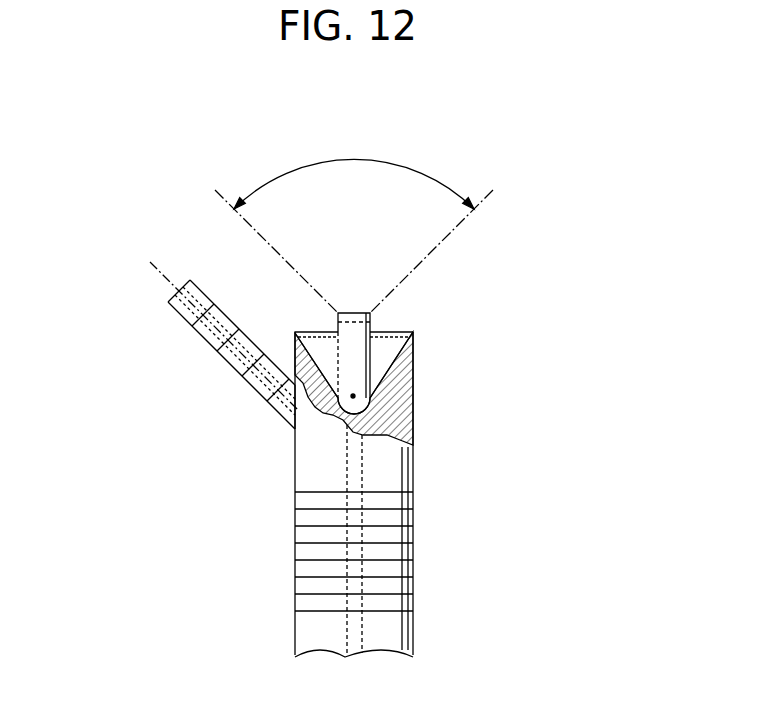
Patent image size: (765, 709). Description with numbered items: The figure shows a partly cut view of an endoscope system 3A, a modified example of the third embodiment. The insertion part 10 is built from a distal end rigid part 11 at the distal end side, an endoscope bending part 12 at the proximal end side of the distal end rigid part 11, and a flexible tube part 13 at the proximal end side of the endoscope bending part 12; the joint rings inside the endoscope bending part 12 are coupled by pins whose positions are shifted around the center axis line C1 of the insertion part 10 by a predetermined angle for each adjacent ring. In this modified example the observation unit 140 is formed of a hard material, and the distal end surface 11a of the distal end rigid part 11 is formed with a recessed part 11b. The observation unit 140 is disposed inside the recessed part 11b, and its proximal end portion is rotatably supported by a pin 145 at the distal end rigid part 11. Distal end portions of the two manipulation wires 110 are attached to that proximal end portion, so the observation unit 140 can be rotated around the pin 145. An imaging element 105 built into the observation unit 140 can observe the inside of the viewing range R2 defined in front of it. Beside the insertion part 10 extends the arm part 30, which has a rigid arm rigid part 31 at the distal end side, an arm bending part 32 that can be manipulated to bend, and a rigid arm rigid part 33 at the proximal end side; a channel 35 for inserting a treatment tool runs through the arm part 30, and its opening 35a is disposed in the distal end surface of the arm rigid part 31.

The endoscope system 3A is at (152, 177).
The viewing range R2 is at (354, 220).
The insertion part 10 is at (477, 510).
The distal end rigid part 11 is at (413, 480).
The endoscope bending part 12 is at (413, 568).
The flexible tube part 13 is at (413, 638).
The distal end surface 11a is at (413, 332).
The recessed part 11b is at (388, 360).
The observation unit 140 is at (340, 342).
The imaging element 105 is at (370, 320).
The pin 145 is at (353, 396).
The manipulation wires 110 is at (347, 440).
The arm part 30 is at (118, 362).
The arm rigid part 31 is at (180, 316).
The arm bending part 32 is at (213, 338).
The arm rigid part 33 is at (262, 396).
The channel 35 is at (273, 407).
The opening 35a is at (180, 289).
The center axis line C1 is at (160, 274).